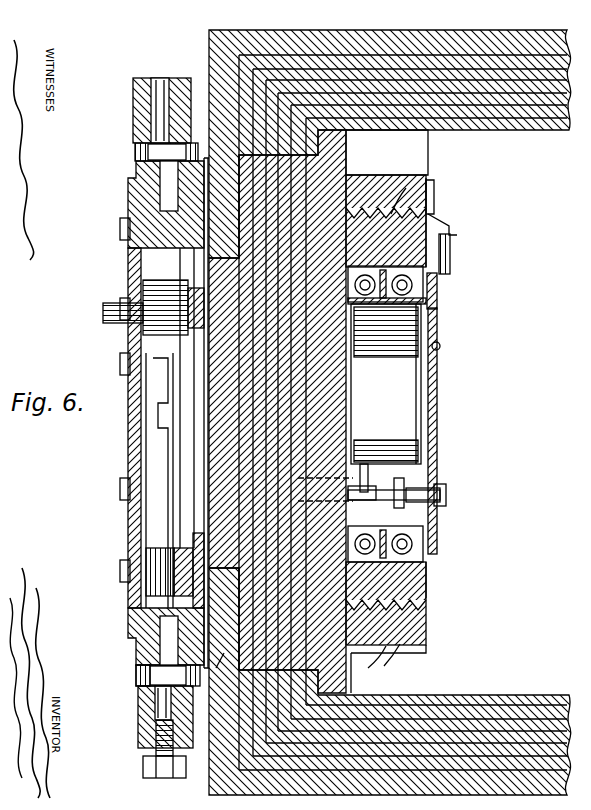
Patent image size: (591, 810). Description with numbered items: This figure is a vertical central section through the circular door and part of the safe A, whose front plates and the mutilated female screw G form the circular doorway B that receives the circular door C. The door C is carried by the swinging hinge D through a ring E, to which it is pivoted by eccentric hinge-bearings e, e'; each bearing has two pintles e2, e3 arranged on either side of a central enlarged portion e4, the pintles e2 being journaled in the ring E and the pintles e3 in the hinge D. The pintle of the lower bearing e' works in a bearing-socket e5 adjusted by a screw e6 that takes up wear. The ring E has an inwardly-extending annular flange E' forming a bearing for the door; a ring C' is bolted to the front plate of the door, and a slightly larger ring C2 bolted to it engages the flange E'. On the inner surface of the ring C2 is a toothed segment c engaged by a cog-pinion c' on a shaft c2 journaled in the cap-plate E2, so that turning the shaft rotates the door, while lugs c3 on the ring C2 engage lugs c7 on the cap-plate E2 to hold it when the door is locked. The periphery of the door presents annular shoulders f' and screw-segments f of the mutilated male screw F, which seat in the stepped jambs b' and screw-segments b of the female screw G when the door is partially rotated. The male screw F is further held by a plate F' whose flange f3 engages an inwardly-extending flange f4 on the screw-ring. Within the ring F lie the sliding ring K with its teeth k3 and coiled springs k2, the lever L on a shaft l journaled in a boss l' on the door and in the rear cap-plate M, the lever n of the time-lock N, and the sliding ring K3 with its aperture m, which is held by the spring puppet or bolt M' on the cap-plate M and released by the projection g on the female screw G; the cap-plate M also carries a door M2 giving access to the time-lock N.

The safe A is at (527, 80).
The circular aperture or doorway B is at (228, 148).
The circular door C is at (270, 411).
The ring C' is at (187, 555).
The ring C2 is at (172, 542).
The hinge D is at (127, 92).
The ring E is at (145, 413).
The annular flange E' is at (124, 397).
The cap-plate E2 is at (128, 356).
The mutilated male screw F is at (408, 221).
The plate F' is at (417, 553).
The mutilated female screw G is at (385, 200).
The sliding ring K is at (425, 296).
The sliding ring K3 is at (446, 290).
The lever L is at (436, 476).
The rear cap-plate M is at (460, 505).
The spring puppet or bolt M' is at (471, 247).
The door M2 is at (429, 398).
The time-lock N is at (386, 384).
The screw-segments b is at (389, 415).
The stepped jambs b' is at (370, 417).
The toothed segment c is at (141, 294).
The cog-pinion c' is at (148, 304).
The shaft c2 is at (128, 316).
The lugs c3 is at (146, 446).
The bracket c7 is at (150, 400).
The hinge-bearing e is at (146, 142).
The hinge-bearing e' is at (123, 680).
The pintle e2 is at (163, 182).
The pintle e3 is at (152, 85).
The central enlarged portion e4 is at (152, 146).
The bearing-socket e5 is at (150, 715).
The screw e6 is at (156, 772).
The screw-segments f is at (445, 580).
The annular shoulders f' is at (211, 690).
The flange f3 is at (432, 322).
The inwardly-extending flange f4 is at (422, 170).
The projection g is at (444, 220).
The coiled springs k2 is at (440, 546).
The teeth or projections k3 is at (438, 500).
The shaft l is at (428, 481).
The boss l' is at (405, 455).
The aperture m is at (432, 282).
The lever n is at (358, 480).